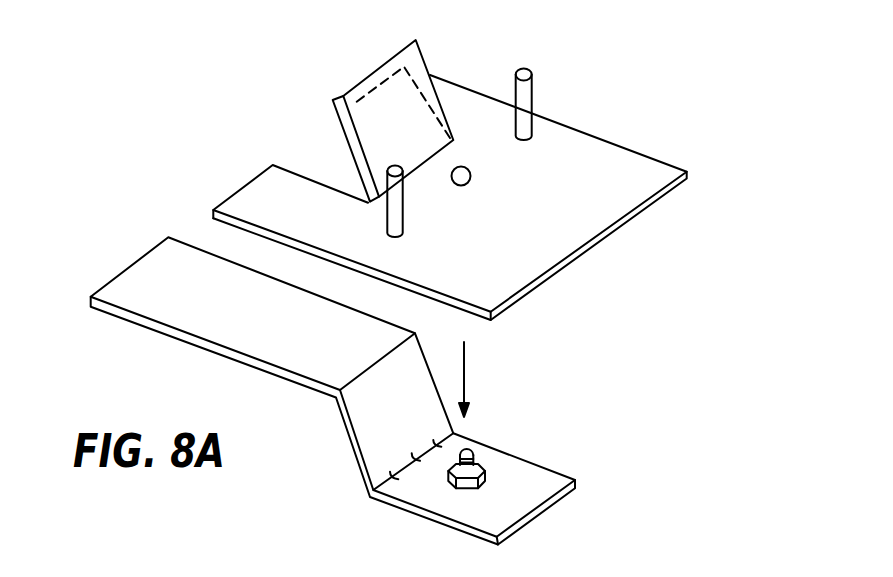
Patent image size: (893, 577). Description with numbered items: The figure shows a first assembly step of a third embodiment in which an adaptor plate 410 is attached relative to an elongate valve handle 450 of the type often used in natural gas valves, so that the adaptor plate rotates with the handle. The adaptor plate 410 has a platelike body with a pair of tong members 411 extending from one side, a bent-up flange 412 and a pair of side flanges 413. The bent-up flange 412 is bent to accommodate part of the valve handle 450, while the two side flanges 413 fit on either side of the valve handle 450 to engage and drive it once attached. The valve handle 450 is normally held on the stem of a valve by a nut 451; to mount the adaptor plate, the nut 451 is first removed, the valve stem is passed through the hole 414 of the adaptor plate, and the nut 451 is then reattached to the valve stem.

The adaptor plate 410 is at (513, 272).
The tong member 411 is at (523, 98).
The bent-up flange 412 is at (343, 96).
The side flange 413 is at (265, 197).
The hole 414 is at (470, 173).
The valve handle 450 is at (153, 285).
The nut 451 is at (482, 463).